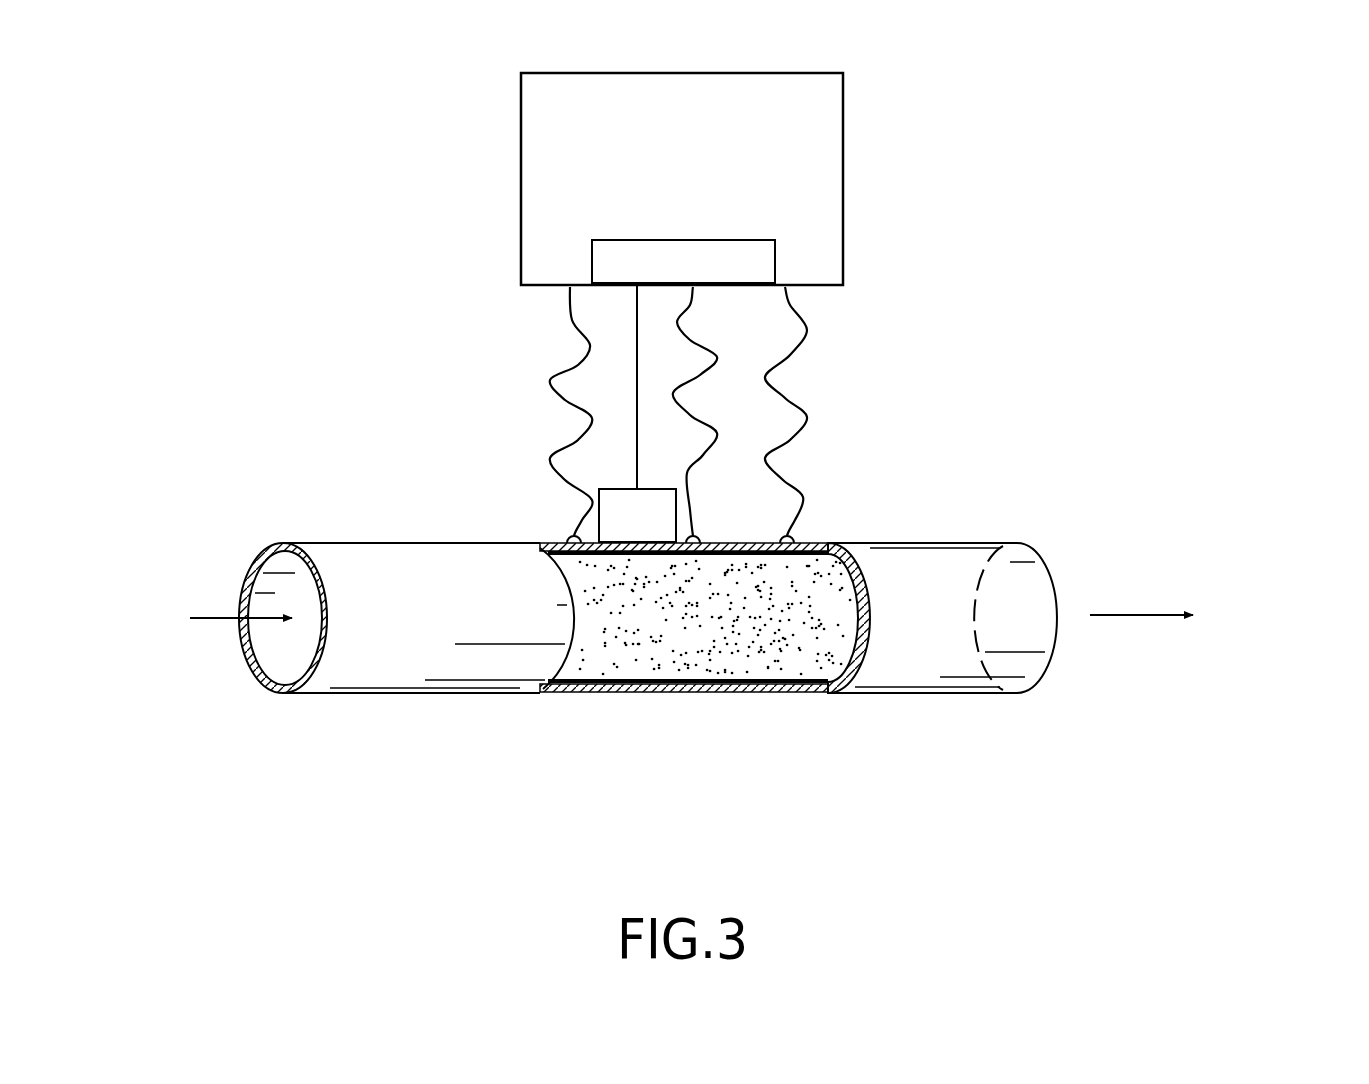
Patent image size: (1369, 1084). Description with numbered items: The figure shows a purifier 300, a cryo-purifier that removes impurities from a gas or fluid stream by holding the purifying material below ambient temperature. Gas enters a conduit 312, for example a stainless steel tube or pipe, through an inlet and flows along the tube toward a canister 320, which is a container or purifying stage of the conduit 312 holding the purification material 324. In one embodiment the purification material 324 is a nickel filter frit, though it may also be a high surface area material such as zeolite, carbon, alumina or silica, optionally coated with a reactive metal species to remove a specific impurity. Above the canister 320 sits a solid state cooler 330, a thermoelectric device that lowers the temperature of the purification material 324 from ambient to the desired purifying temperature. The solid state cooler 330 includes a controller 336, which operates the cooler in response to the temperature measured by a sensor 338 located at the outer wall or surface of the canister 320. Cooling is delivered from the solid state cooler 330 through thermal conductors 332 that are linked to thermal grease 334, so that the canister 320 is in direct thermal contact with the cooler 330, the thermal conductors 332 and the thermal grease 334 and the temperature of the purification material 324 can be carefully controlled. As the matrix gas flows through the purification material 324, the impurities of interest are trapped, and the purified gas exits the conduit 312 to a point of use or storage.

The purifier 300 is at (311, 218).
The conduit 312 is at (292, 543).
The canister 320 is at (567, 652).
The purification material 324 is at (842, 582).
The solid state cooler 330 is at (845, 158).
The thermal conductors 332 is at (693, 300).
The thermal grease 334 is at (702, 533).
The controller 336 is at (775, 256).
The sensor 338 is at (598, 508).